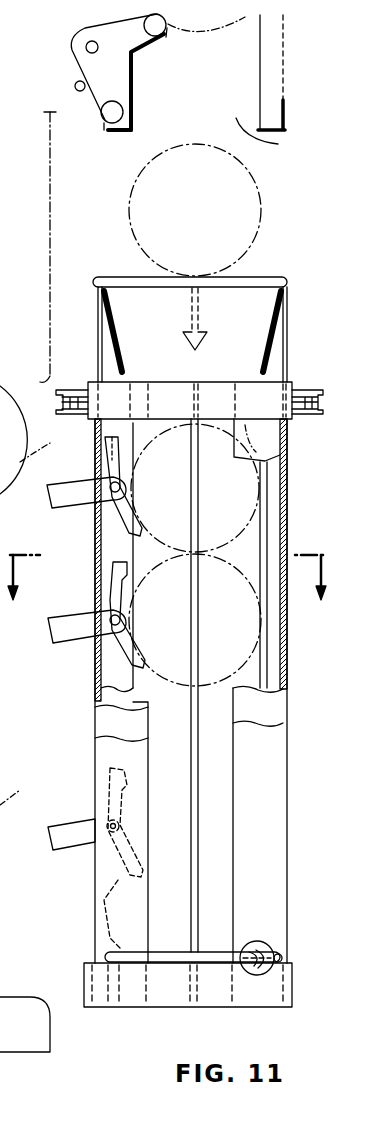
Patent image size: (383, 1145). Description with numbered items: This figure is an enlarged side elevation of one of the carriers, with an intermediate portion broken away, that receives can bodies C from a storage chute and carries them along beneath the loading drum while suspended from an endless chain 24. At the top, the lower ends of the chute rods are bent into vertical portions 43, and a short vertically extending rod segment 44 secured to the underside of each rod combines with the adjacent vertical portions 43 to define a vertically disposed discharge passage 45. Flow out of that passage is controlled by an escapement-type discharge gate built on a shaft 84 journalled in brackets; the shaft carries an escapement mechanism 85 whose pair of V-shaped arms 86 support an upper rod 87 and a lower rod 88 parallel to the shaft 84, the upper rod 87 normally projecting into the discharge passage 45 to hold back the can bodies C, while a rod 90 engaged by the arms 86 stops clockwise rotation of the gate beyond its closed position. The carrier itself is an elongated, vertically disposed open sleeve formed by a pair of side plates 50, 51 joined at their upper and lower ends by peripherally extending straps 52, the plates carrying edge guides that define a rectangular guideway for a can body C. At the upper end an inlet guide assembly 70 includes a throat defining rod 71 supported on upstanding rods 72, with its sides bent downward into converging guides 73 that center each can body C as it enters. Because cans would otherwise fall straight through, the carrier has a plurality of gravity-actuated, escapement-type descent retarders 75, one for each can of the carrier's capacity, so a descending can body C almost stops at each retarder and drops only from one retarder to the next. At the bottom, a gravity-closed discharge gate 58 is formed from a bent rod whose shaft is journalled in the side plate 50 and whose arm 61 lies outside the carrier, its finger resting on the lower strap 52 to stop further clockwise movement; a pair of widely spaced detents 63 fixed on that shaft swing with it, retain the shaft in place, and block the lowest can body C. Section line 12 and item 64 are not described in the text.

The section line 12 is at (167, 594).
The endless chain 24 is at (88, 388).
The vertical portions of the rods 43 is at (284, 114).
The rod segment 44 is at (118, 132).
The discharge passage 45 is at (271, 142).
The side plate 50 is at (95, 766).
The side plate 51 is at (290, 778).
The strap 52 is at (110, 434).
The discharge gate 58 is at (176, 950).
The arm 61 is at (212, 957).
The detent 63 is at (148, 915).
The ball 64 is at (266, 946).
The inlet guide assembly 70 is at (191, 305).
The throat defining rod 71 is at (116, 277).
The upstanding rod 72 is at (98, 350).
The guide 73 is at (118, 354).
The descent retarder 75 is at (86, 526).
The shaft 84 is at (85, 46).
The escapement mechanism 85 is at (96, 62).
The V-shaped arm 86 is at (123, 74).
The upper rod 87 is at (166, 32).
The lower rod 88 is at (124, 112).
The rod 90 is at (82, 92).
The can body C is at (240, 222).